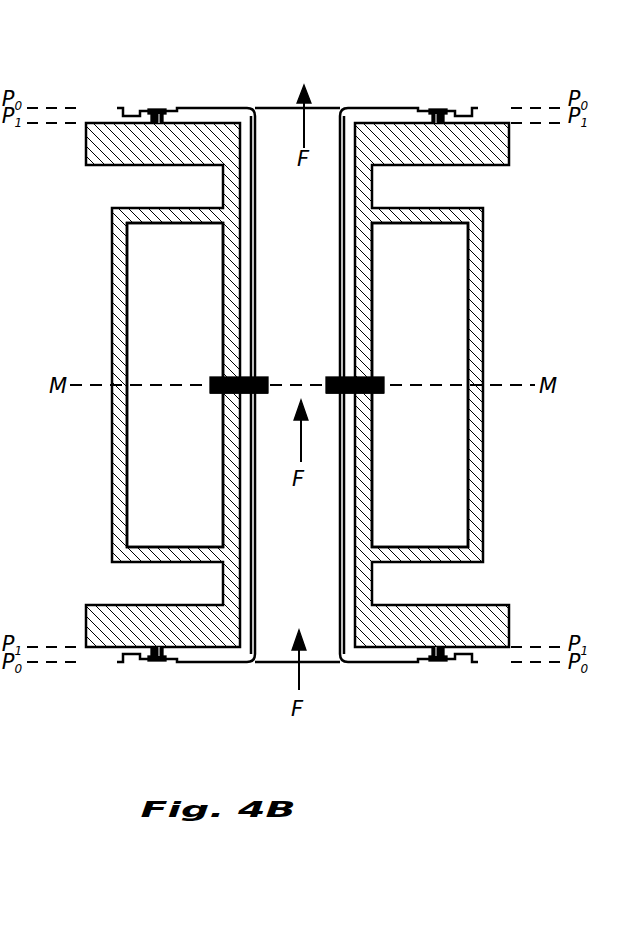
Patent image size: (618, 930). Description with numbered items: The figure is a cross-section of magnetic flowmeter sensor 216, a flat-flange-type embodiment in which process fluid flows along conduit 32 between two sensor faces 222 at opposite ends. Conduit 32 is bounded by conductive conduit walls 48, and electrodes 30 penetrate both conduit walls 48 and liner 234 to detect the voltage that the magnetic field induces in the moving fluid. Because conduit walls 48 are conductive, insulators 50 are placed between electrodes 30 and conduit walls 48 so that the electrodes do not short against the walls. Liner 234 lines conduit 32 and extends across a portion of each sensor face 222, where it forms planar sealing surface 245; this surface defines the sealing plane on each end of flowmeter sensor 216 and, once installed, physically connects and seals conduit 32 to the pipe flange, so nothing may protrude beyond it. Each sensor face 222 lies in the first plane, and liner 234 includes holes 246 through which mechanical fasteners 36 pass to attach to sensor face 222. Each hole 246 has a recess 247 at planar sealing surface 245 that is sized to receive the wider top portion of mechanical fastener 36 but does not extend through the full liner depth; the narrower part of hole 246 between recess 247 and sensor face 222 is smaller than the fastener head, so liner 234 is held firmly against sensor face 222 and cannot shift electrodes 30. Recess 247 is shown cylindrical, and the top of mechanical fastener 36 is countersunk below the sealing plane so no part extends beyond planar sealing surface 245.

The magnetic flowmeter sensor 216 is at (496, 225).
The sensor face 222 is at (101, 110).
The recess 247 is at (142, 108).
The mechanical fastener 36 is at (158, 108).
The planar sealing surface 245 is at (243, 108).
The liner 234 is at (266, 129).
The hole 246 is at (181, 120).
The conduit wall 48 is at (224, 298).
The insulator 50 is at (214, 380).
The electrode 30 is at (212, 391).
The conduit 32 is at (288, 334).